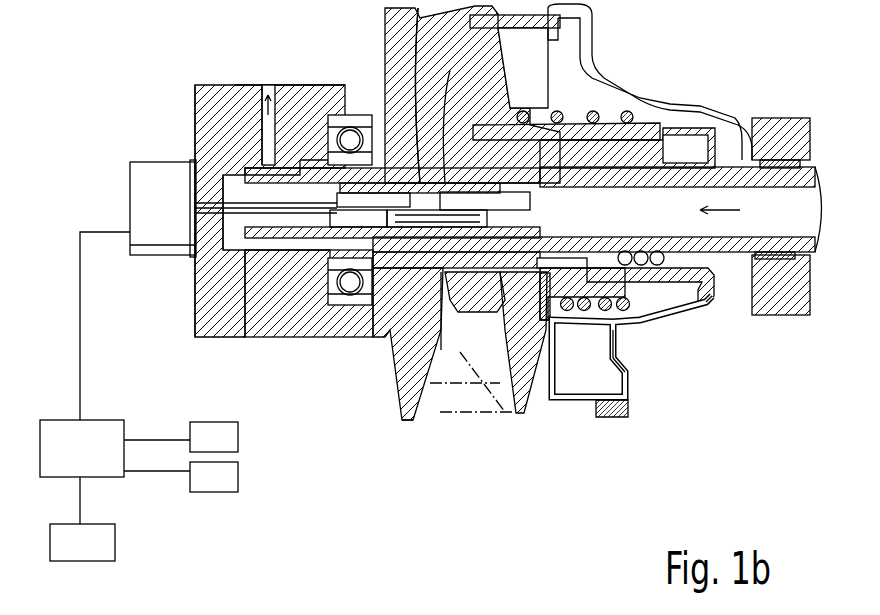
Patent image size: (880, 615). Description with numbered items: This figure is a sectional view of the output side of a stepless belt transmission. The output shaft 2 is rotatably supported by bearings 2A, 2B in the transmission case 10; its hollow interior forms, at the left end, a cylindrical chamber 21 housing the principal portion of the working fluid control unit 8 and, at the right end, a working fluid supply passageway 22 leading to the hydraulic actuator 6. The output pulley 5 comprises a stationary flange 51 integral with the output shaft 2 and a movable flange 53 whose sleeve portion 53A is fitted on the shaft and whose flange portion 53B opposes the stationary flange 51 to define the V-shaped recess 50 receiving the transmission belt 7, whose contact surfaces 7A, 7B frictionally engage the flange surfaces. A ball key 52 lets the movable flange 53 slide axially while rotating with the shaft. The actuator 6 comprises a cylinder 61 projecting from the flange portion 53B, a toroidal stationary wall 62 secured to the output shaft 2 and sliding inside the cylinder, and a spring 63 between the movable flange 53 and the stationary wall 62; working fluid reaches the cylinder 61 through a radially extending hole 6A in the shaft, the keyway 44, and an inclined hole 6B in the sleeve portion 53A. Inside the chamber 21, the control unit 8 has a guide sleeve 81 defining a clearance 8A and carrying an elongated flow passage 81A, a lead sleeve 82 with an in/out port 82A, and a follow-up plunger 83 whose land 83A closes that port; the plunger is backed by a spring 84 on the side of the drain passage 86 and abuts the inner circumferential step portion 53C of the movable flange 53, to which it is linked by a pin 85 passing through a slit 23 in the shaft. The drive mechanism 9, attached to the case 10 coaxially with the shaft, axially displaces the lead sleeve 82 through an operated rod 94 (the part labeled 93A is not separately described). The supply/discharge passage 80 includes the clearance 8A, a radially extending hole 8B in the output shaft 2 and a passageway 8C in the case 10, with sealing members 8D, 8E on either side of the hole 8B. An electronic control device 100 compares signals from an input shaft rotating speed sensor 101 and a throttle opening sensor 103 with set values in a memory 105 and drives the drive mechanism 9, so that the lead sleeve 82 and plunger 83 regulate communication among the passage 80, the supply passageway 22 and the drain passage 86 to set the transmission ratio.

The output shaft 2 is at (815, 254).
The bearing 2A is at (420, 232).
The bearing 2B is at (780, 260).
The output pulley 5 is at (400, 428).
The V-shaped recess 50 is at (460, 320).
The stationary flange 51 is at (395, 400).
The ball key 52 is at (660, 268).
The movable flange 53 is at (548, 330).
The sleeve portion 53A is at (680, 140).
The flange portion 53B is at (540, 320).
The inner circumferential step portion 53C is at (600, 115).
The actuator 6 is at (635, 410).
The radially extending hole 6A is at (715, 300).
The inclined hole 6B is at (620, 350).
The cylinder 61 is at (580, 404).
The toroidal stationary wall 62 is at (572, 326).
The spring 63 is at (650, 340).
The transmission belt 7 is at (478, 370).
The contact surface 7A is at (443, 322).
The contact surface 7B is at (512, 342).
The working fluid control unit 8 is at (190, 322).
The clearance 8A is at (290, 260).
The radially extending hole 8B is at (200, 200).
The working fluid passageway 8C is at (262, 85).
The sealing member 8D is at (225, 175).
The sealing member 8E is at (272, 90).
The working fluid supply/discharge passage 80 is at (250, 85).
The guide sleeve 81 is at (310, 165).
The elongated working fluid flow passage 81A is at (418, 70).
The lead sleeve 82 is at (386, 165).
The in/out port 82A is at (478, 17).
The follow-up plunger 83 is at (517, 110).
The land 83A is at (447, 95).
The spring 84 is at (352, 255).
The pin 85 is at (630, 128).
The drain passage 86 is at (350, 135).
The drive mechanism 9 is at (135, 155).
The collar 93A is at (318, 258).
The operated rod 94 is at (195, 286).
The transmission case 10 is at (200, 97).
The cylindrical chamber 21 is at (345, 230).
The working fluid supply passageway 22 is at (790, 162).
The slit 23 is at (650, 128).
The keyway 44 is at (705, 300).
The electronic control device 100 is at (85, 378).
The input shaft rotating speed sensor 101 is at (181, 437).
The throttle opening sensor 103 is at (181, 477).
The memory 105 is at (82, 542).